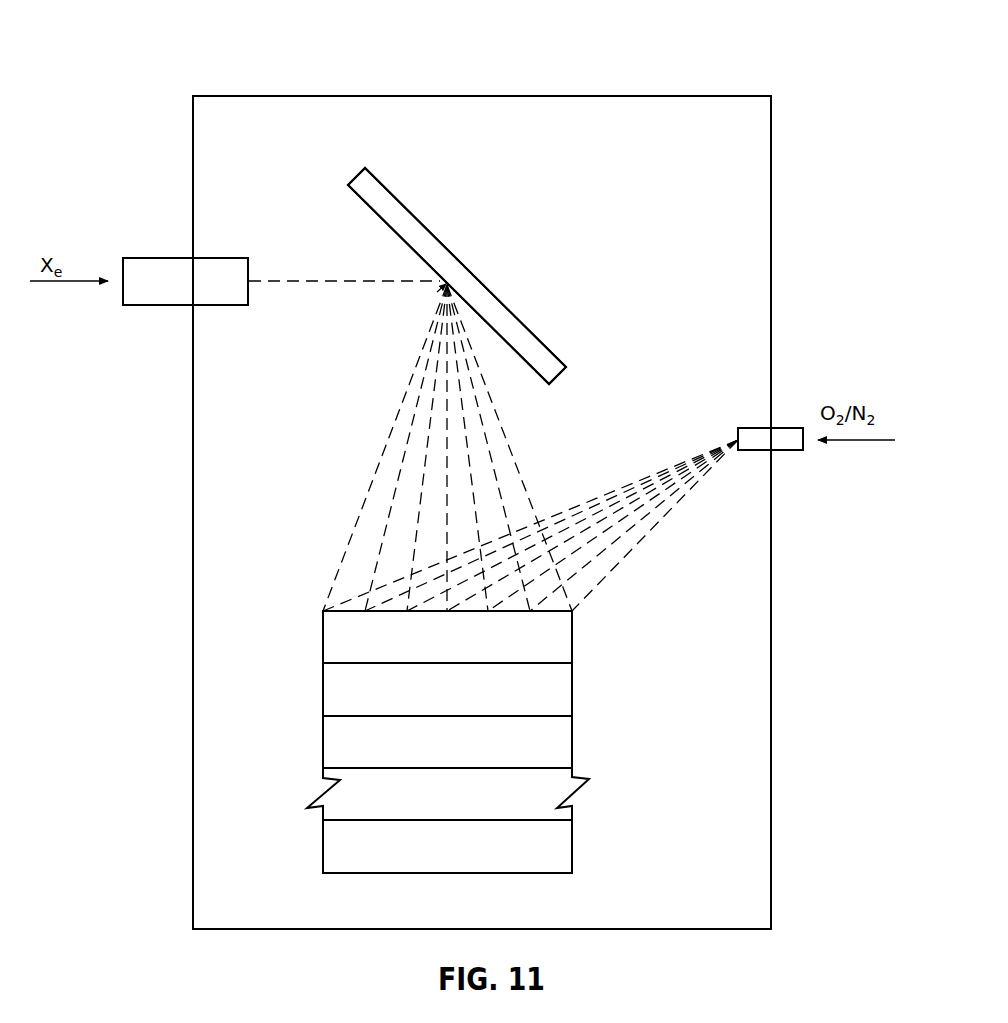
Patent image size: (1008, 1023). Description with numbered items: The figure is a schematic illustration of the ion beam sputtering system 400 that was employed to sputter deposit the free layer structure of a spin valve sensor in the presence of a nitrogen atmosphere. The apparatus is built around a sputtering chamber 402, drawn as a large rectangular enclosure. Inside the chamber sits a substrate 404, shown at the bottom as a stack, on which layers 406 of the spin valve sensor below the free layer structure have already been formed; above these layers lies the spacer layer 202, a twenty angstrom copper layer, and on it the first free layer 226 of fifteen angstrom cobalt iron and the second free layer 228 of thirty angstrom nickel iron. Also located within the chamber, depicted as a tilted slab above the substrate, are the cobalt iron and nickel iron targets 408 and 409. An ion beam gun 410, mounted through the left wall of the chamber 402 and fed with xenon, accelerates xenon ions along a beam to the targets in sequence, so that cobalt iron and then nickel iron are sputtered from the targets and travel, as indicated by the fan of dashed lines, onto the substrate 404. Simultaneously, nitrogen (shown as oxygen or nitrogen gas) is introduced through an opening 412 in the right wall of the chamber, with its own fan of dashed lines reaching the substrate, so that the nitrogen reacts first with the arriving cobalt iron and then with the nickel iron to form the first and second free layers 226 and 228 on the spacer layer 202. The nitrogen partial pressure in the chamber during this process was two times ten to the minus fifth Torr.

The ion beam sputtering system 400 is at (637, 76).
The sputtering chamber 402 is at (772, 800).
The substrate 404 is at (572, 850).
The layers 406 is at (572, 775).
The cobalt iron target 408 is at (525, 325).
The nickel iron target 409 is at (415, 225).
The ion beam gun 410 is at (147, 305).
The opening 412 is at (800, 450).
The spacer layer 202 is at (572, 734).
The first free layer 226 is at (572, 683).
The second free layer 228 is at (572, 632).